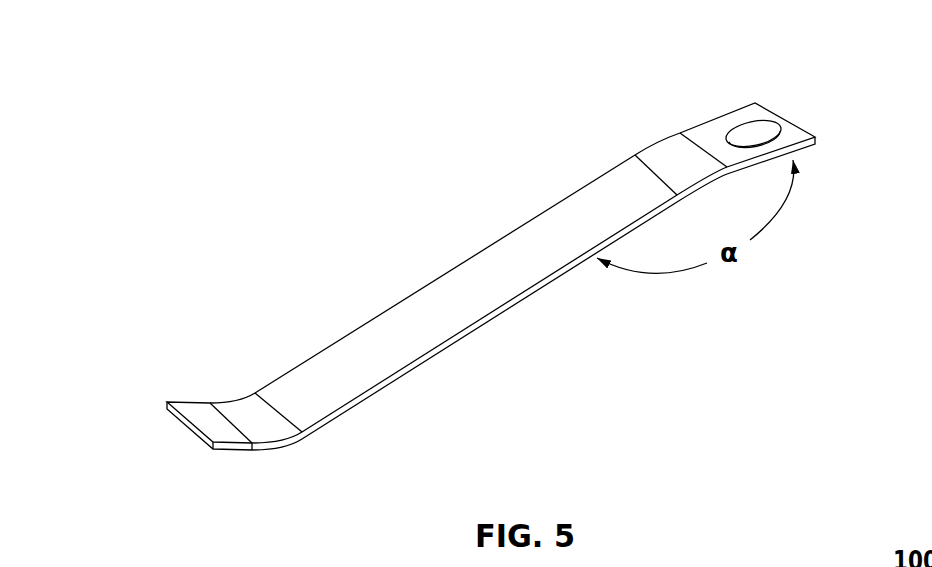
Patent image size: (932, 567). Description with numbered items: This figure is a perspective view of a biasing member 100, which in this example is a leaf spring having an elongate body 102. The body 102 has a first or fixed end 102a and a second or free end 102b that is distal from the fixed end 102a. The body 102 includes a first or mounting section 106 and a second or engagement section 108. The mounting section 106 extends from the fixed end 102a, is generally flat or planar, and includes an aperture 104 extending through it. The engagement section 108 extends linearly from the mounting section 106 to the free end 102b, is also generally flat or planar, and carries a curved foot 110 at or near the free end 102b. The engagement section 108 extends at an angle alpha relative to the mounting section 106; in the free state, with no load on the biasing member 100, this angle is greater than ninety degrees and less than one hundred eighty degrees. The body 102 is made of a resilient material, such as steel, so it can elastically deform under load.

The biasing member 100 is at (491, 287).
The elongate body 102 is at (497, 240).
The fixed end 102a is at (788, 117).
The free end 102b is at (180, 428).
The aperture 104 is at (740, 123).
The mounting section 106 is at (678, 115).
The engagement section 108 is at (363, 303).
The curved foot 110 is at (268, 457).